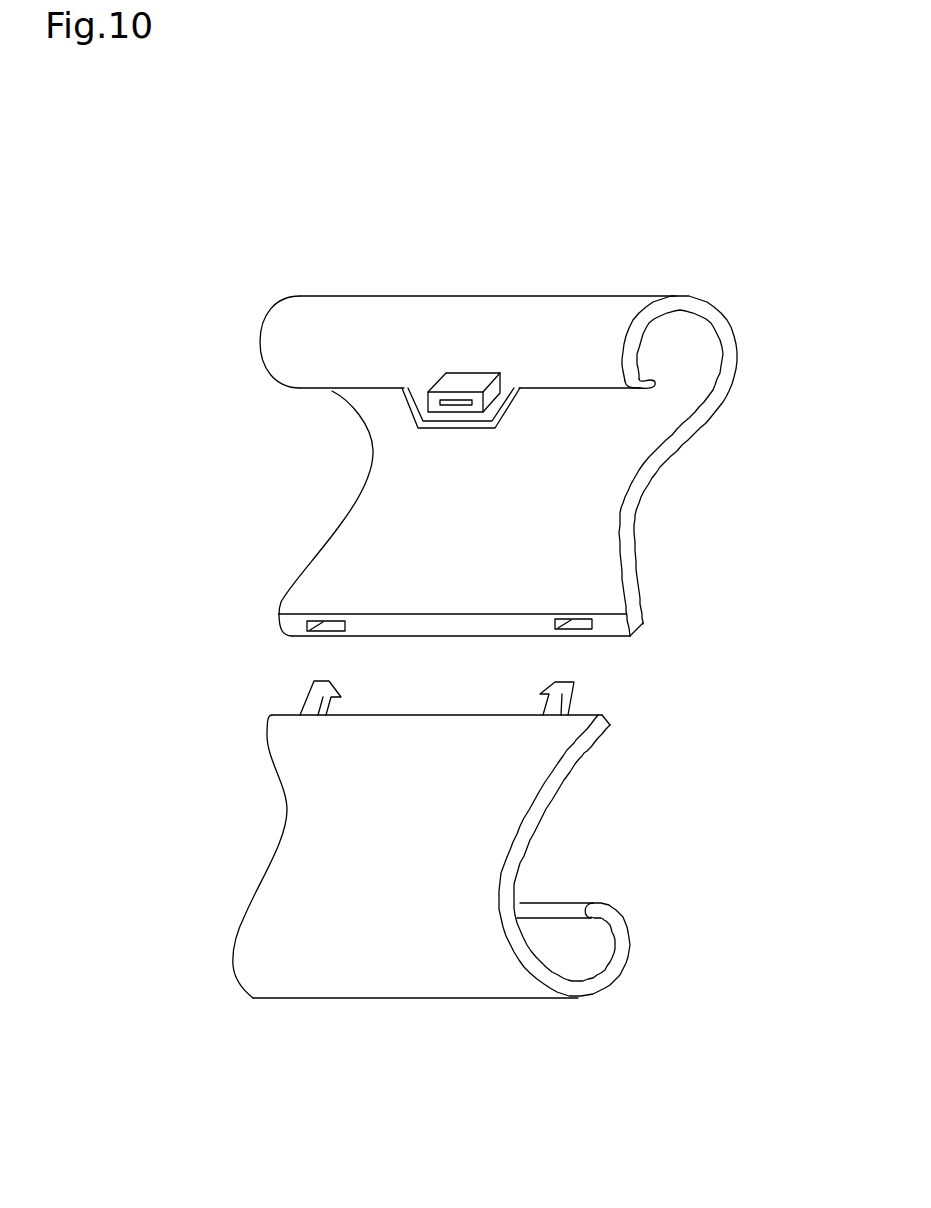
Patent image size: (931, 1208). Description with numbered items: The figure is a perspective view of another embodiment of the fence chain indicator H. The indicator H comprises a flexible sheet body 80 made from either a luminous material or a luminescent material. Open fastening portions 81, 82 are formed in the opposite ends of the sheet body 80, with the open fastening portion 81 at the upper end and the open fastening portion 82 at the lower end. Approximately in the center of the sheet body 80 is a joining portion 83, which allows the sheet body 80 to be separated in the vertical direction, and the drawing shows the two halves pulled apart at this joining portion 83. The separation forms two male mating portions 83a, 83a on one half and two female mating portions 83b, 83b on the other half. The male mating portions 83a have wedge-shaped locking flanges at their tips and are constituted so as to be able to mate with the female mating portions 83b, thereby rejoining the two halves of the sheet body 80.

The flexible sheet body 80 is at (652, 508).
The open fastening portion 81 is at (595, 310).
The open fastening portion 82 is at (624, 932).
The joining portion 83 is at (597, 670).
The male mating portion 83a is at (312, 696).
The female mating portion 83b is at (327, 633).
The fence chain indicator H is at (486, 268).